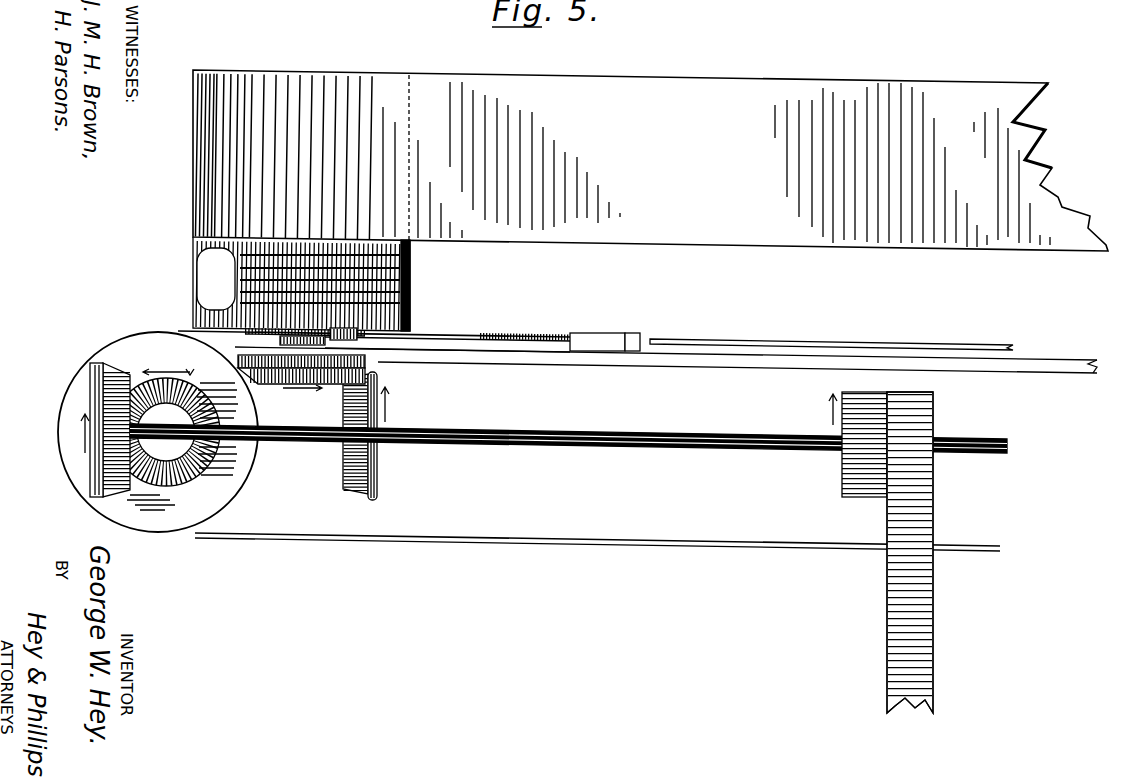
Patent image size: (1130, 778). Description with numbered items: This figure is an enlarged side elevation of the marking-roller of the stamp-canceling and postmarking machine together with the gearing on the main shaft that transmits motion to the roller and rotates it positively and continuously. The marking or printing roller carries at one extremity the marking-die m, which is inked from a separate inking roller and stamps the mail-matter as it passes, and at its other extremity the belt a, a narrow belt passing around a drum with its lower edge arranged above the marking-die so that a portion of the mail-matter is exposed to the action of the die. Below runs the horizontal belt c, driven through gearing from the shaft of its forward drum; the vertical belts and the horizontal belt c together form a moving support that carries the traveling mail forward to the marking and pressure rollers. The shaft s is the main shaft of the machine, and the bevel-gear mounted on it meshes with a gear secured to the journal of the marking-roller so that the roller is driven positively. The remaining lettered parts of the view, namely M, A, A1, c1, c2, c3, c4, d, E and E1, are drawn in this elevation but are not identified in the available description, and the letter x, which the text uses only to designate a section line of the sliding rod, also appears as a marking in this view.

The belt a is at (650, 160).
The marking-die m is at (301, 286).
The rack rod M is at (453, 337).
The tube A is at (529, 441).
The frame plate A1 is at (584, 361).
The horizontal belt c is at (704, 341).
The hub gear c1 is at (284, 412).
The flange disc c2 is at (120, 368).
The ring gear c3 is at (188, 481).
The slide block c4 is at (346, 341).
The block d is at (284, 341).
The shaft s is at (568, 433).
The strip E is at (930, 513).
The block E1 is at (864, 444).
The section line x is at (458, 425).